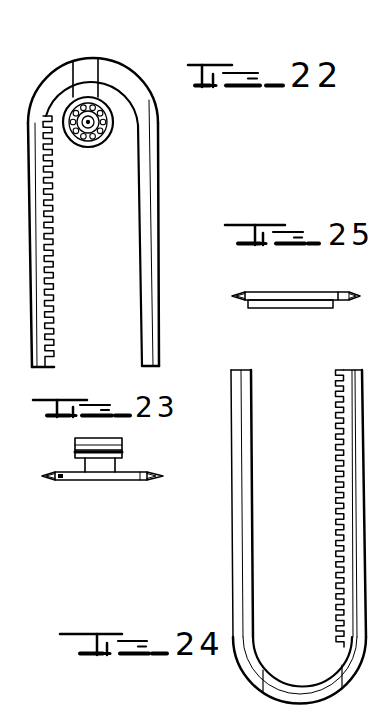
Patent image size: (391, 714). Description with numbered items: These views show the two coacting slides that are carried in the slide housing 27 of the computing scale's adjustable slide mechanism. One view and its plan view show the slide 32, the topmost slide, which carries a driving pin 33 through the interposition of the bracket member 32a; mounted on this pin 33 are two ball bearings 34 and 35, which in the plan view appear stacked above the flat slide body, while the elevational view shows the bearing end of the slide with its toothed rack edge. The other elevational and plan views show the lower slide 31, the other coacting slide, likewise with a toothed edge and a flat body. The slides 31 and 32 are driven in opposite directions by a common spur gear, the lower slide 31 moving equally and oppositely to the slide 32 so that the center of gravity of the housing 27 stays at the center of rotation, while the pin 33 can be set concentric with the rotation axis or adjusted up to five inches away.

In FIG. 22, the slide housing 27 is at (79, 212).
In FIG. 25, the lower slide 31 is at (277, 298).
In FIG. 24, the lower slide 31 is at (333, 487).
In FIG. 22, the slide 32 is at (57, 264).
In FIG. 23, the slide 32 is at (102, 475).
In FIG. 22, the bracket member 32a is at (88, 68).
In FIG. 23, the bracket member 32a is at (93, 463).
In FIG. 22, the pin 33 is at (92, 122).
In FIG. 23, the ball bearing 34 is at (123, 451).
In FIG. 22, the ball bearing 35 is at (88, 147).
In FIG. 23, the ball bearing 35 is at (118, 439).